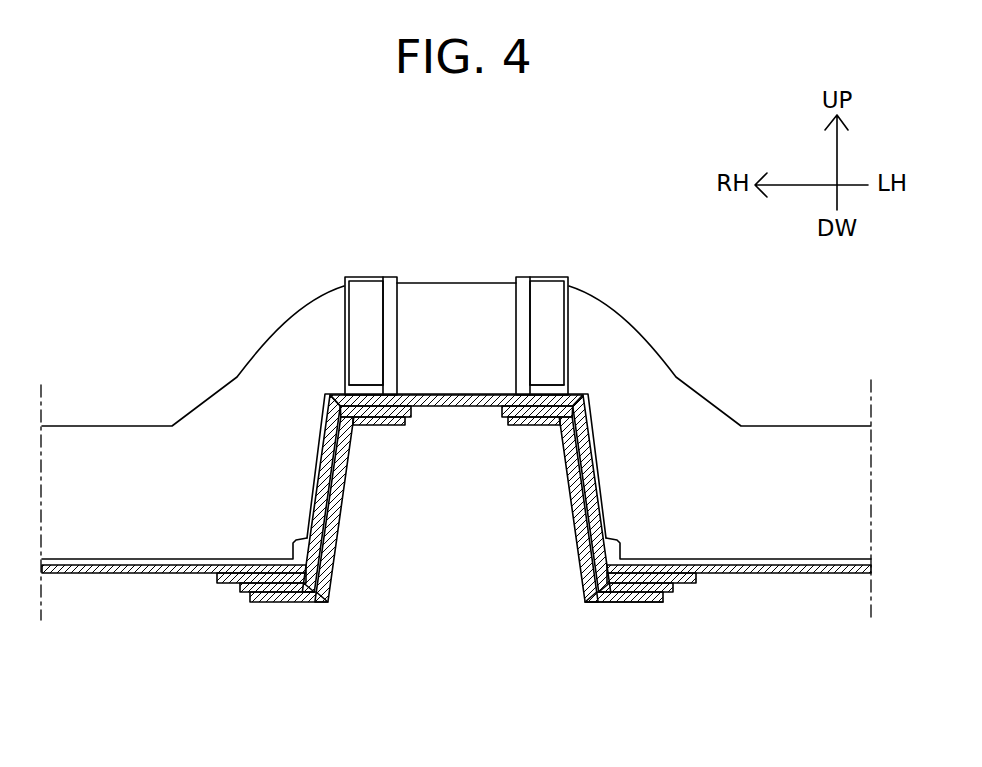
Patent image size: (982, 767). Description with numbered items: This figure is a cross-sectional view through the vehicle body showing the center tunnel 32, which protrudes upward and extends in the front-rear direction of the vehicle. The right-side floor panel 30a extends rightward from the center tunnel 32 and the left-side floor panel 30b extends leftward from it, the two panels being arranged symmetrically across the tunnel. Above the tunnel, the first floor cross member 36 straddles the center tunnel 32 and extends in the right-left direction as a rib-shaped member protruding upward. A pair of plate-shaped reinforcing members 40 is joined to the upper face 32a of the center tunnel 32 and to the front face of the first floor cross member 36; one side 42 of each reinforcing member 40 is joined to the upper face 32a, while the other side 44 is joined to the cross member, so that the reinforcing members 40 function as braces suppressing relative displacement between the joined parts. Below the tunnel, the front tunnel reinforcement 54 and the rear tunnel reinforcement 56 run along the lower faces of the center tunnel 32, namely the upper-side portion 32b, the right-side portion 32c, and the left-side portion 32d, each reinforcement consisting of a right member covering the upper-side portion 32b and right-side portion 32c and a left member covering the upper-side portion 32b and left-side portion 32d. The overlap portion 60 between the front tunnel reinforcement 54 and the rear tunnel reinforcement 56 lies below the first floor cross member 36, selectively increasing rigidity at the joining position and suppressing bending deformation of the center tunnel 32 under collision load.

The right-side floor panel 30a is at (108, 574).
The left-side floor panel 30b is at (817, 574).
The center tunnel 32 is at (590, 396).
The upper face 32a is at (470, 393).
The upper-side portion 32b is at (428, 407).
The right-side portion 32c is at (335, 482).
The left-side portion 32d is at (578, 482).
The first floor cross member 36 is at (83, 442).
The reinforcing member 40 is at (363, 277).
The one side 42 is at (365, 383).
The other side 44 is at (358, 307).
The front tunnel reinforcement 54 is at (281, 603).
The rear tunnel reinforcement 56 is at (235, 585).
The overlap portion 60 is at (600, 621).